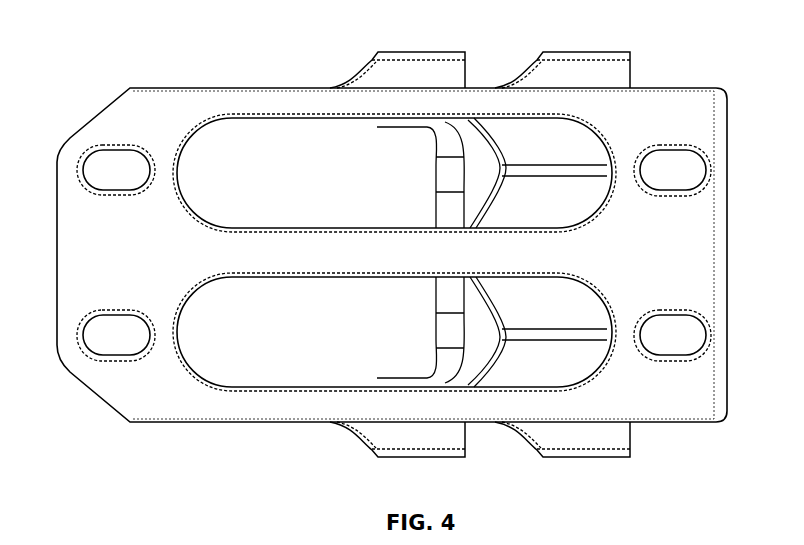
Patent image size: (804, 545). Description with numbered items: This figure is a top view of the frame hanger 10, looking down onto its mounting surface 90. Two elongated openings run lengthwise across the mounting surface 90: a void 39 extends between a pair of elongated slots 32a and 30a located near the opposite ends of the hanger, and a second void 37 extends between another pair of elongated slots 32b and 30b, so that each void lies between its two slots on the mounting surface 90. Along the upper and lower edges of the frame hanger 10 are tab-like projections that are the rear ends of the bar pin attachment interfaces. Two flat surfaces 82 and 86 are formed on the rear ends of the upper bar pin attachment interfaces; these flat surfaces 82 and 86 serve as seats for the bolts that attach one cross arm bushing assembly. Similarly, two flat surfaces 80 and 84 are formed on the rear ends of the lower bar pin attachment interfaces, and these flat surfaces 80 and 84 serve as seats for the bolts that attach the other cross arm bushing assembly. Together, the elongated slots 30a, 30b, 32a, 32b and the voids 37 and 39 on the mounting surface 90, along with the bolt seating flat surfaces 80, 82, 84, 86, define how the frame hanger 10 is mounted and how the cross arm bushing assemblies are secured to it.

The frame hanger 10 is at (142, 78).
The elongated slot 30a is at (695, 172).
The elongated slot 30b is at (683, 345).
The elongated slot 32a is at (107, 165).
The elongated slot 32b is at (108, 345).
The void 37 is at (245, 362).
The void 39 is at (275, 148).
The flat surface 80 is at (631, 69).
The flat surface 82 is at (465, 63).
The flat surface 84 is at (632, 440).
The flat surface 86 is at (466, 440).
The mounting surface 90 is at (648, 103).